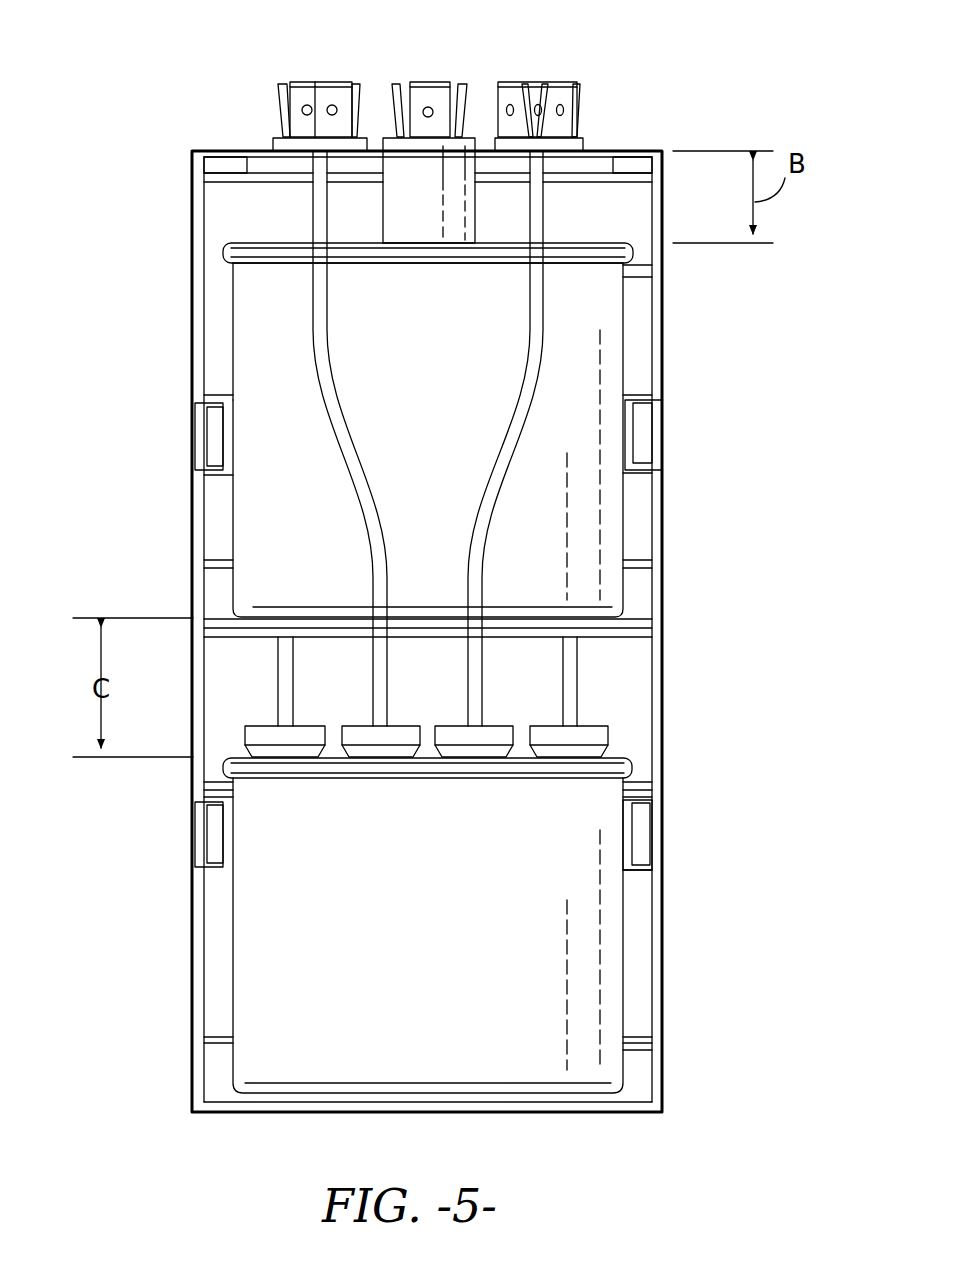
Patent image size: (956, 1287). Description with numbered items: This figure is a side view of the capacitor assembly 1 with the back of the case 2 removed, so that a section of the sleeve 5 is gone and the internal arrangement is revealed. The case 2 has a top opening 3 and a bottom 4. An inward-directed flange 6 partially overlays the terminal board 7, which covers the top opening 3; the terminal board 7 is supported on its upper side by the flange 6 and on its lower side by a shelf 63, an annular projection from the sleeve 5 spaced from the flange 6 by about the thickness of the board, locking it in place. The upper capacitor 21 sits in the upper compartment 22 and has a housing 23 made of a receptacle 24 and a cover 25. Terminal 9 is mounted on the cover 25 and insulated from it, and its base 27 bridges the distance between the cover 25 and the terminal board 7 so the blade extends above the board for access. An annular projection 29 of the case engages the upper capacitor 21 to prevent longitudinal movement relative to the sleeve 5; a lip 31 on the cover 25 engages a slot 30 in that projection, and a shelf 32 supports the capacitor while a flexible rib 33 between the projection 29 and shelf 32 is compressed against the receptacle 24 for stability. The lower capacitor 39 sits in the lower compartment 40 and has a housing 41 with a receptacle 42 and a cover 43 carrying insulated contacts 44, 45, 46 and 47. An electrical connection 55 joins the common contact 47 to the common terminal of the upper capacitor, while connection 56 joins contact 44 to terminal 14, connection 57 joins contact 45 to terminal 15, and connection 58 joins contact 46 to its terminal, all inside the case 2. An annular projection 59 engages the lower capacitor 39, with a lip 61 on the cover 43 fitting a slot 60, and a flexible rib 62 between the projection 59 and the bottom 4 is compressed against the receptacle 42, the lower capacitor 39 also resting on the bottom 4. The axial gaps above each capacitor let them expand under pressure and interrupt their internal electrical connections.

The capacitor assembly 1 is at (128, 86).
The case 2 is at (670, 303).
The bottom 4 is at (273, 1113).
The flange 6 is at (217, 160).
The shelf 63 is at (640, 185).
The slot 30 is at (213, 167).
The top opening 3 is at (262, 150).
The terminal board 7 is at (603, 166).
The lip 31 is at (235, 243).
The cover 25 is at (272, 250).
The annular projection 29 is at (655, 255).
The upper capacitor 21 is at (608, 320).
The receptacle 24 is at (258, 294).
The connection 57 is at (330, 326).
The connection 58 is at (535, 390).
The sleeve 5 is at (190, 372).
The upper compartment 22 is at (632, 518).
The housing 23 is at (226, 512).
The flexible rib 33 is at (640, 562).
The shelf 32 is at (632, 632).
The electrical connection 55 is at (277, 702).
The connection 56 is at (555, 702).
The common contact 47 is at (298, 737).
The contact 45 is at (392, 740).
The contact 46 is at (472, 740).
The contact 44 is at (560, 740).
The slot 60 is at (632, 770).
The annular projection 59 is at (630, 770).
The cover 43 is at (223, 762).
The lip 61 is at (635, 815).
The lower compartment 40 is at (220, 898).
The receptacle 42 is at (258, 1000).
The housing 41 is at (228, 945).
The lower capacitor 39 is at (626, 935).
The flexible rib 62 is at (636, 1048).
The terminal 14 is at (283, 134).
The terminal 9 is at (483, 134).
The base 27 is at (400, 150).
The terminal 15 is at (568, 146).